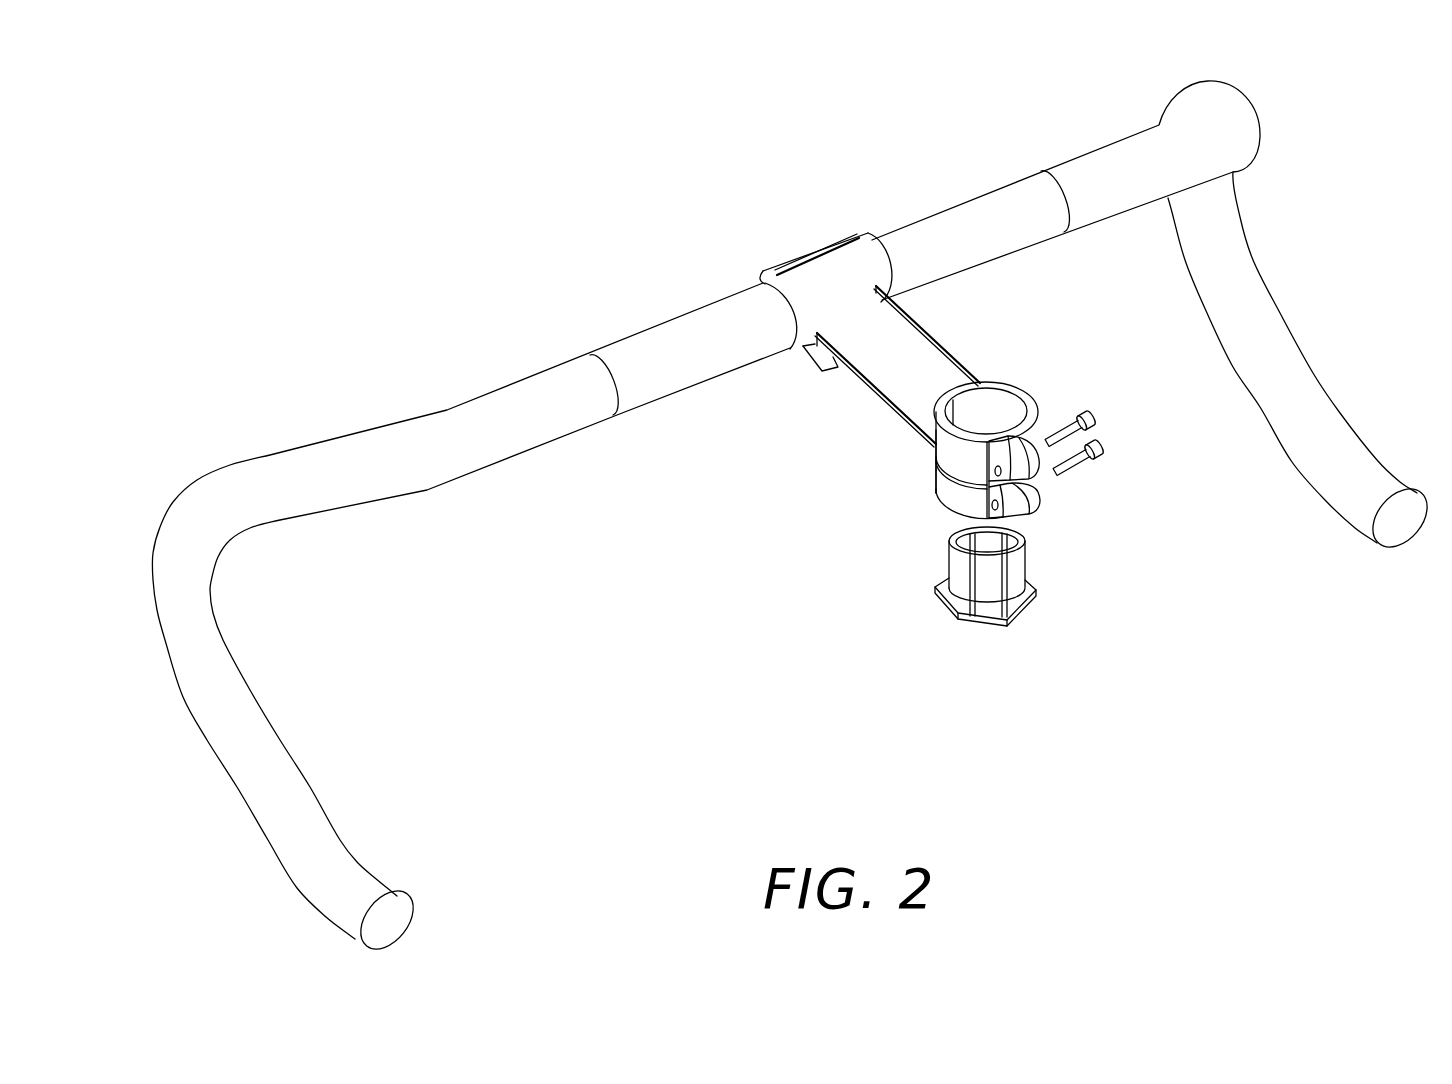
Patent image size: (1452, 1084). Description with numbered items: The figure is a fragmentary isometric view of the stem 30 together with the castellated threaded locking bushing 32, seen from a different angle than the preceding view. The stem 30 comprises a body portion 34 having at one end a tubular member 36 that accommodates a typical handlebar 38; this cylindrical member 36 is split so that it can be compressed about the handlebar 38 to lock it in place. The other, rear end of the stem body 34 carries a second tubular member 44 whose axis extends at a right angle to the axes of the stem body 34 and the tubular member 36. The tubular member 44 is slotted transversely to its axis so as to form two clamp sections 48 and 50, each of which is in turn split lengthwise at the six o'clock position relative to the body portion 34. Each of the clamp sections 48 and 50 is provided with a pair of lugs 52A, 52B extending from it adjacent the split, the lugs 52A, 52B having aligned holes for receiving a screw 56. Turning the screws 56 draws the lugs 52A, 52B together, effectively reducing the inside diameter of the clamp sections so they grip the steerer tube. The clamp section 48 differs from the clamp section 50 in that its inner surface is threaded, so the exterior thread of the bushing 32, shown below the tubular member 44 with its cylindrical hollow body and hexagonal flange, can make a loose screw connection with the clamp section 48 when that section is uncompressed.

The stem 30 is at (927, 419).
The castellated threaded locking bushing 32 is at (929, 598).
The body portion 34 is at (887, 373).
The tubular member 36 is at (781, 263).
The handlebar 38 is at (507, 381).
The second tubular member 44 is at (985, 445).
The clamp section 48 is at (950, 488).
The clamp section 50 is at (950, 450).
The lug 52A is at (988, 495).
The lug 52B is at (1027, 494).
The screw 56 is at (1098, 418).